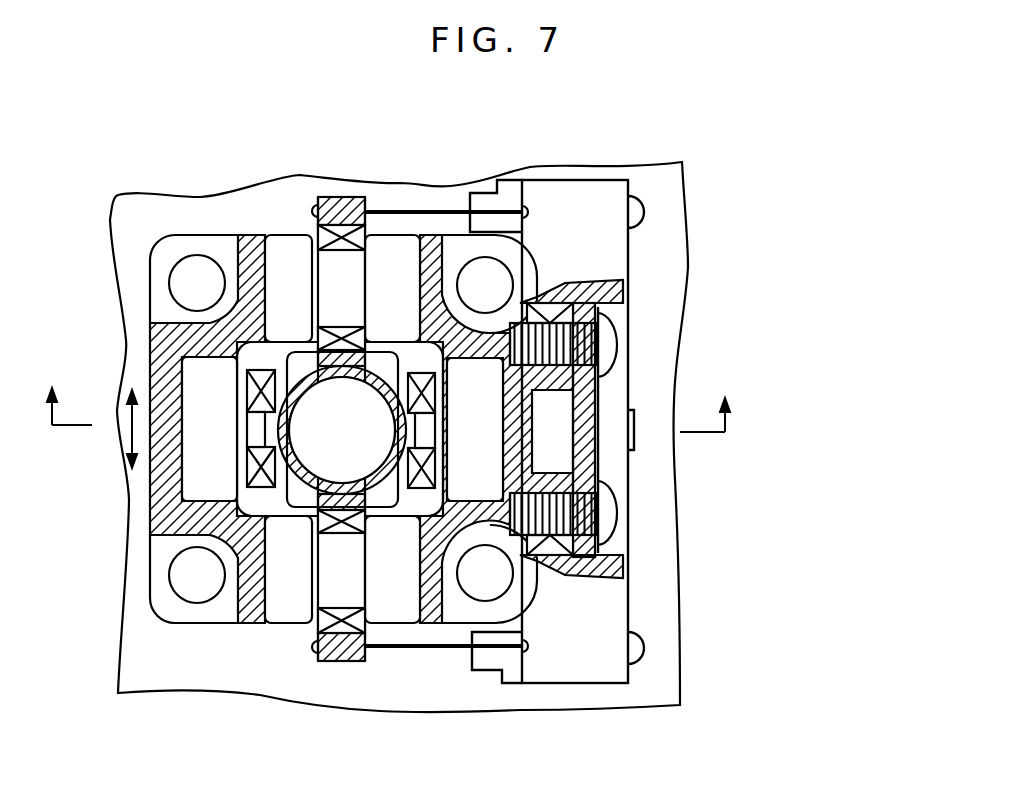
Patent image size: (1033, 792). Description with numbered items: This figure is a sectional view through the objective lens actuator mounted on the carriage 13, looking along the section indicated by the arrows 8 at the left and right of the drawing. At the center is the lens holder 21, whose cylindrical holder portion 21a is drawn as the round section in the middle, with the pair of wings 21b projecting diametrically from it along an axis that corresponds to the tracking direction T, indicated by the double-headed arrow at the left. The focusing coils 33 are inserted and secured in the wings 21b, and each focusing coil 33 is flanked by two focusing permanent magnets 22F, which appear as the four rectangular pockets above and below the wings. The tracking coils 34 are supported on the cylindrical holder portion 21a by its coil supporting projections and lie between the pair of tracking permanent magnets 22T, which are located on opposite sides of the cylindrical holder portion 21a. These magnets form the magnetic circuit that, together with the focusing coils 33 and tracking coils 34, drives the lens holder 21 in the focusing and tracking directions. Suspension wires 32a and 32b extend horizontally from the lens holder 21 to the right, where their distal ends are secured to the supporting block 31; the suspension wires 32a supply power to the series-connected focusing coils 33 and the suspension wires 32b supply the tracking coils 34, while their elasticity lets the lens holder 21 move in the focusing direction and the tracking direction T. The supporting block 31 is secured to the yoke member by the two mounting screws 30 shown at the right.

The carriage 13 is at (682, 640).
The supporting block 31 is at (641, 214).
The mounting screws 30 is at (640, 352).
The tracking permanent magnets 22T is at (190, 475).
The focusing permanent magnets 22F is at (282, 248).
The lens holder 21 is at (328, 675).
The cylindrical holder portion 21a is at (278, 435).
The wings 21b is at (347, 200).
The suspension wires 32a is at (412, 210).
The suspension wires 32b is at (443, 171).
The focusing coils 33 is at (363, 337).
The tracking coils 34 is at (252, 467).
The section line 8- 8 is at (388, 392).
The tracking direction T is at (128, 430).